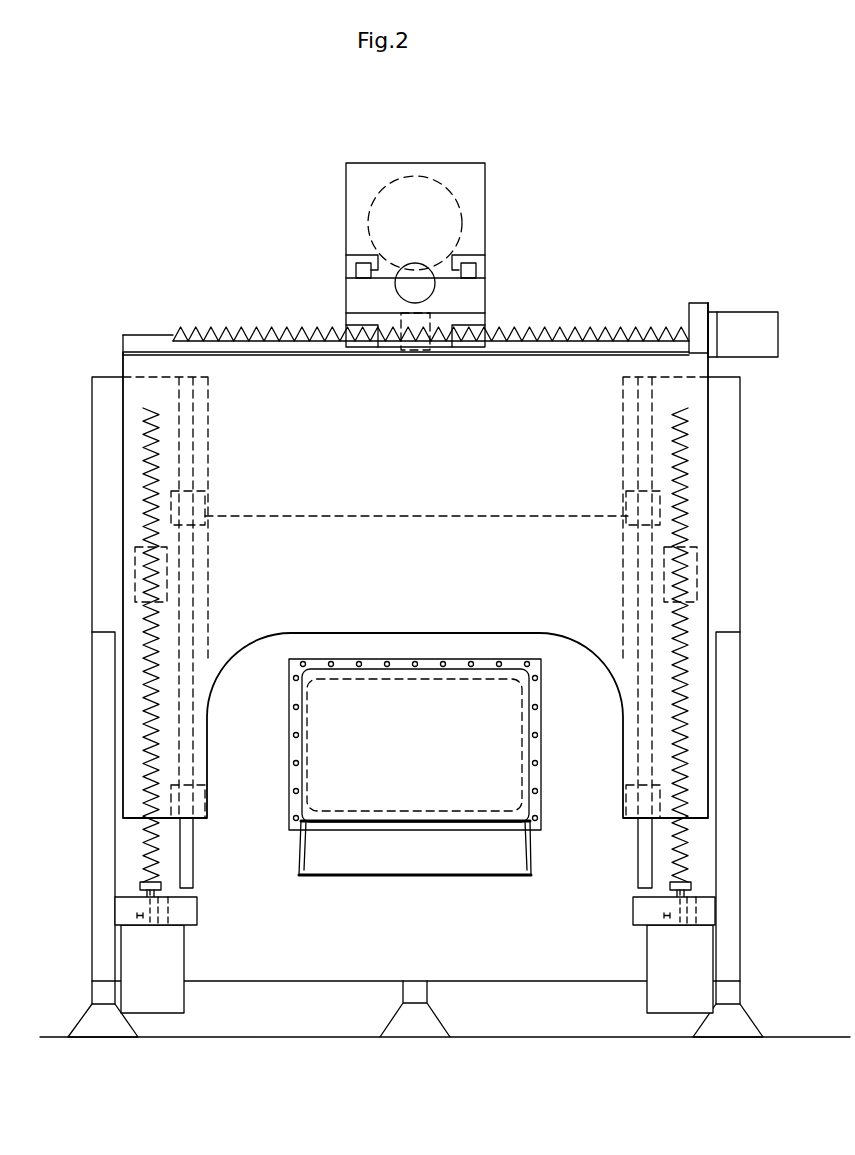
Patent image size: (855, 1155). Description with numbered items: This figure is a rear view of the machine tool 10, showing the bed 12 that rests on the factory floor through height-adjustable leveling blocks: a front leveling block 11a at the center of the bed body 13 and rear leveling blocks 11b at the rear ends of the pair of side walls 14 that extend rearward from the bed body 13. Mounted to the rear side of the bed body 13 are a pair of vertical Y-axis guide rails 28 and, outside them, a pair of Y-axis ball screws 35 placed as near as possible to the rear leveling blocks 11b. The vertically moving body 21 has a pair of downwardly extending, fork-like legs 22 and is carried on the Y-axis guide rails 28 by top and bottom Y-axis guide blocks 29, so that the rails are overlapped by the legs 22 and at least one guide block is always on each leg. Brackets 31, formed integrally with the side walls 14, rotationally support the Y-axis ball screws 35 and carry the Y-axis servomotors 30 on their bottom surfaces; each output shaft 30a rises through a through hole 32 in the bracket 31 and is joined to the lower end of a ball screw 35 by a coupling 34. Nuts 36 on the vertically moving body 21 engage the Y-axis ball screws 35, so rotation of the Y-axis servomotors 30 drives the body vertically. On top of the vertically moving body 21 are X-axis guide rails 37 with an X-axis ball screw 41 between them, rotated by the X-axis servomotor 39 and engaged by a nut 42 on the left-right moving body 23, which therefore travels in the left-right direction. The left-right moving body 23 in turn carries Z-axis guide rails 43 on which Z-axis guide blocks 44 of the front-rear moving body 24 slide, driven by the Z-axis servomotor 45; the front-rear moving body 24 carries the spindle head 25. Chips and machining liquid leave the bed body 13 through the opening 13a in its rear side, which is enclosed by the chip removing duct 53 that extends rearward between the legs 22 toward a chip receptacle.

The machine tool 10 is at (602, 113).
The front leveling block 11a is at (418, 1027).
The rear leveling blocks 11b is at (102, 1027).
The bed 12 is at (70, 362).
The bed body 13 is at (102, 615).
The opening 13a is at (368, 688).
The side walls 14 is at (105, 828).
The vertically moving body 21 is at (477, 134).
The legs 22 is at (135, 778).
The left-right moving body 23 is at (355, 295).
The front-rear moving body 24 is at (362, 163).
The spindle head 25 is at (455, 209).
The Y-axis guide rails 28 is at (190, 628).
The Y-axis guide blocks 29 is at (205, 503).
The Y-axis servomotors 30 is at (160, 1005).
The output shafts 30a is at (150, 908).
The brackets 31 is at (190, 912).
The through holes 32 is at (140, 912).
The couplings 34 is at (161, 886).
The Y-axis ball screws 35 is at (150, 500).
The nuts 36 is at (137, 565).
The X-axis guide rails 37 is at (148, 338).
The X-axis servomotor 39 is at (749, 330).
The X-axis ball screw 41 is at (600, 335).
The nut 42 is at (417, 352).
The Z-axis guide rails 43 is at (355, 270).
The Z-axis guide blocks 44 is at (371, 258).
The Z-axis servomotor 45 is at (432, 289).
The chip removing duct 53 is at (422, 858).